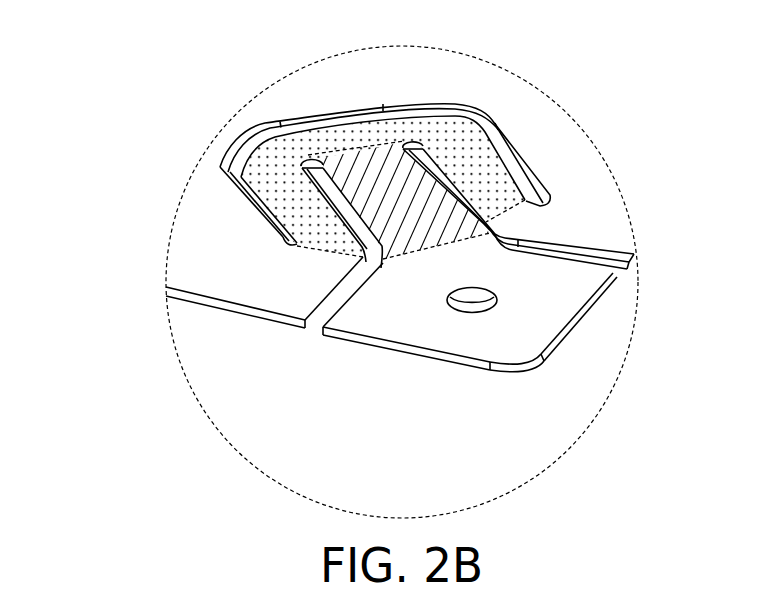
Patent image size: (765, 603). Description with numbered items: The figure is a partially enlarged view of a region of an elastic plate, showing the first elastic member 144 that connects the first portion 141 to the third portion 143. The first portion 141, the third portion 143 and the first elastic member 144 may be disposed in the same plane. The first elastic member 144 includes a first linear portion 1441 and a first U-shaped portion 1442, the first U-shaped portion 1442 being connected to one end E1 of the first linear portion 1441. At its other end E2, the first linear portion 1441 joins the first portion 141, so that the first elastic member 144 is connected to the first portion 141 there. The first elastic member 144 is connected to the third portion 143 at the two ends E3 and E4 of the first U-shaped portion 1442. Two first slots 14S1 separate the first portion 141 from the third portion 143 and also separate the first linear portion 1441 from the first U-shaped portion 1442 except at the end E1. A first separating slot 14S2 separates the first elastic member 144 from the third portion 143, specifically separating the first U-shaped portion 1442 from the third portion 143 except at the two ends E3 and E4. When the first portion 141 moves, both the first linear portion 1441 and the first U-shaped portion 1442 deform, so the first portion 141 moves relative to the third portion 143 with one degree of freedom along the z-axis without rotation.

The first elastic member 144 is at (206, 3).
The first linear portion 1441 is at (318, 142).
The first U-shaped portion 1442 is at (313, 157).
The first portion 141 is at (510, 333).
The third portion 143 is at (622, 233).
The first slots 14S1 is at (315, 333).
The first separating slot 14S2 is at (241, 194).
The end of first linear portion E1 is at (388, 146).
The other end of first linear portion E2 is at (436, 252).
The end of first U-shaped portion E3 is at (331, 252).
The end of first U-shaped portion E4 is at (515, 218).